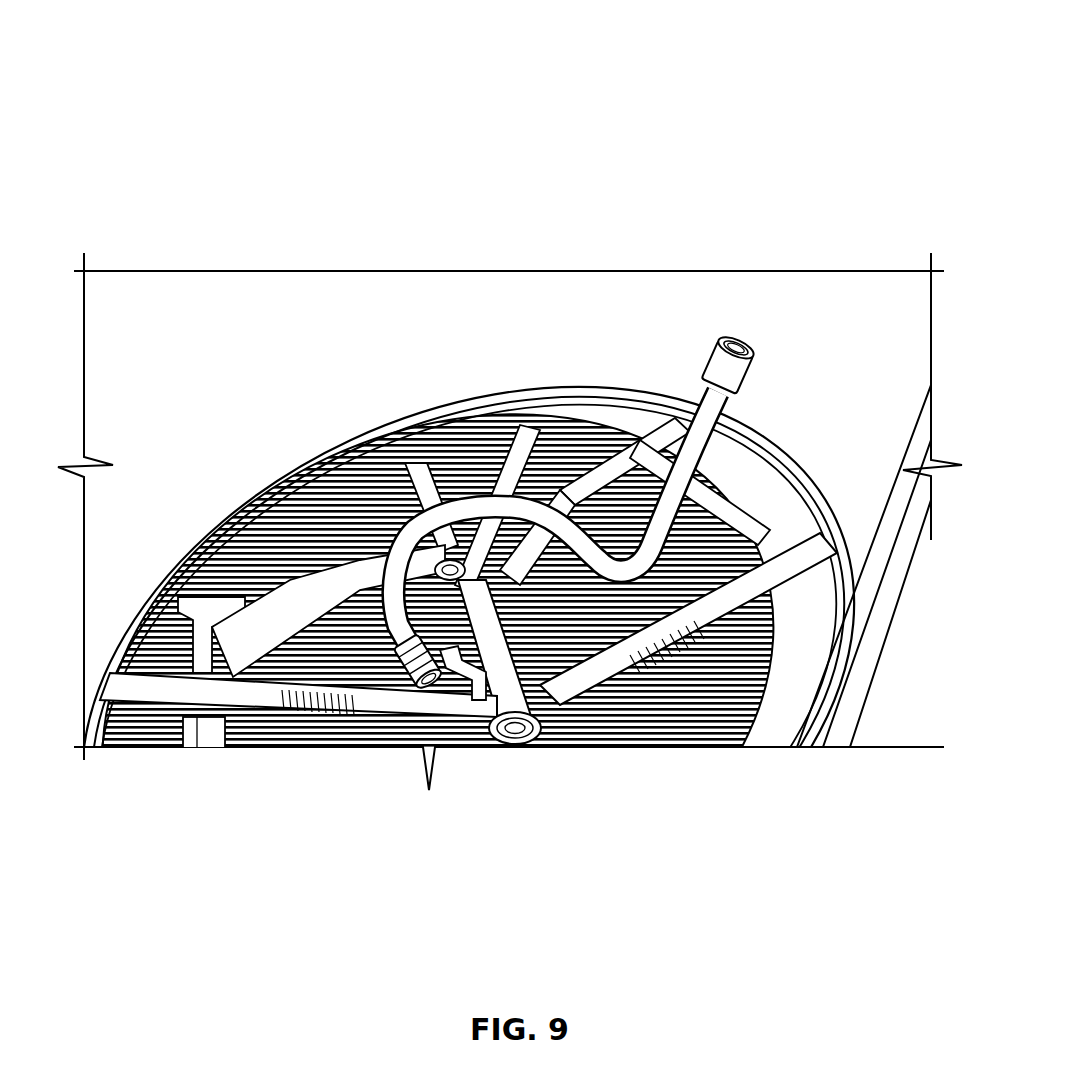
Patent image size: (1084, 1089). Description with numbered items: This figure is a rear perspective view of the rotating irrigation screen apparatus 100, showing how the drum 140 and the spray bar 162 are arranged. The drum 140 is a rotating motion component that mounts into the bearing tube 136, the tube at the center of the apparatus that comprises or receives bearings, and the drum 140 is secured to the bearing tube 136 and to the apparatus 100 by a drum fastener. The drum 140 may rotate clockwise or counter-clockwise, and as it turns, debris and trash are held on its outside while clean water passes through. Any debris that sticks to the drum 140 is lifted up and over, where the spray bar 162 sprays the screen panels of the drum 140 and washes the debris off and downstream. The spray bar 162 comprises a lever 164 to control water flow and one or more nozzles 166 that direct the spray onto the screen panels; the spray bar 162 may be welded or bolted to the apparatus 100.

The rotating irrigation screen apparatus 100 is at (278, 90).
The bearing tube 136 is at (538, 747).
The drum 140 is at (205, 628).
The spray bar 162 is at (698, 396).
The lever 164 is at (478, 702).
The nozzles 166 is at (385, 572).